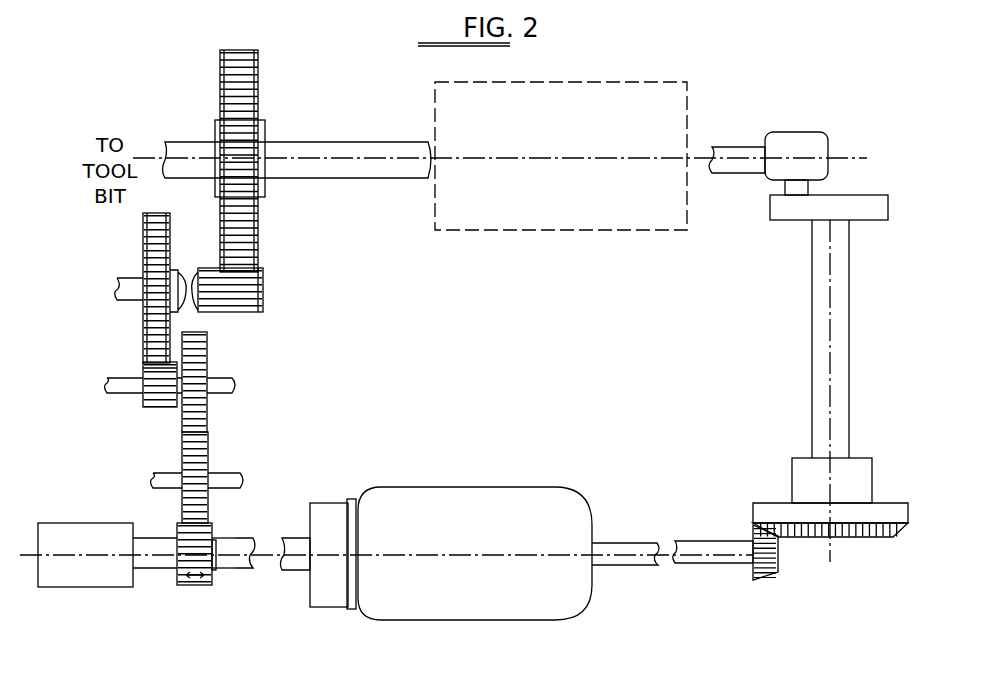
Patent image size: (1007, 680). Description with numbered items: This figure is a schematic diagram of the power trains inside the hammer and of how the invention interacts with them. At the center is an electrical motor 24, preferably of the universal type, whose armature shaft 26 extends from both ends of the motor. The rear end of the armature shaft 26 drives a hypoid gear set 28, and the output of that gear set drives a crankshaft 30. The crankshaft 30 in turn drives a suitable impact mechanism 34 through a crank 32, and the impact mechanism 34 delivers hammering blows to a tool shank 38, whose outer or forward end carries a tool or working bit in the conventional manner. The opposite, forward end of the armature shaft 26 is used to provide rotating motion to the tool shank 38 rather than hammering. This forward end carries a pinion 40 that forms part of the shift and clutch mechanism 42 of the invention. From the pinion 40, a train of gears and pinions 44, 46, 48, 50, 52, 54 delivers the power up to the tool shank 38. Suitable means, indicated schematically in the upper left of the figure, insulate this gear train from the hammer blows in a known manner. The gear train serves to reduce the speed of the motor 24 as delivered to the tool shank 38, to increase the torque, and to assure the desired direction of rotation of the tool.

The electrical motor 24 is at (505, 503).
The armature shaft 26 is at (707, 550).
The hypoid gear set 28 is at (780, 537).
The crankshaft 30 is at (822, 310).
The crank 32 is at (831, 149).
The impact mechanism 34 is at (610, 106).
The tool shank 38 is at (330, 147).
The pinion 40 is at (196, 586).
The shift and clutch mechanism 42 is at (110, 588).
The gear 44 is at (186, 456).
The pinion 46 is at (208, 405).
The gear 48 is at (165, 404).
The gear 50 is at (157, 331).
The pinion 52 is at (250, 300).
The gear 54 is at (245, 226).